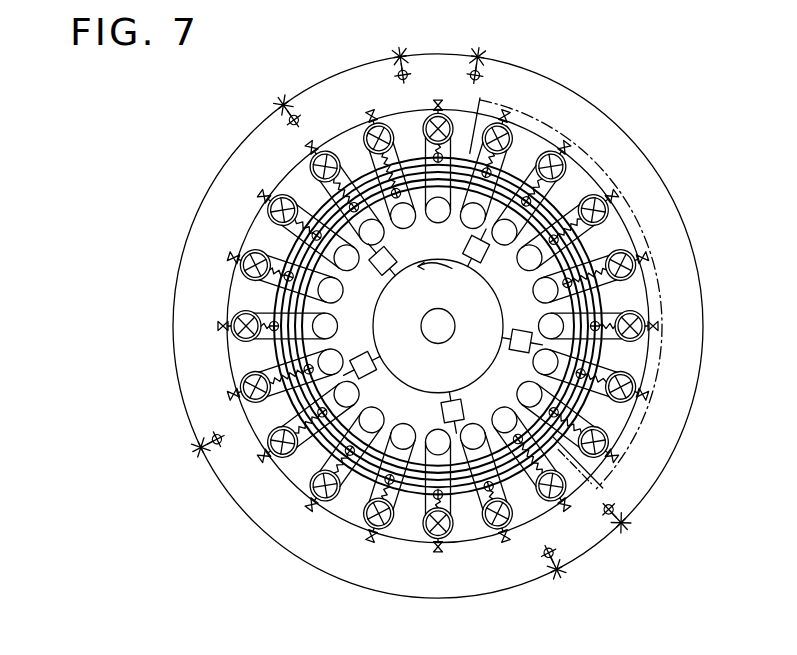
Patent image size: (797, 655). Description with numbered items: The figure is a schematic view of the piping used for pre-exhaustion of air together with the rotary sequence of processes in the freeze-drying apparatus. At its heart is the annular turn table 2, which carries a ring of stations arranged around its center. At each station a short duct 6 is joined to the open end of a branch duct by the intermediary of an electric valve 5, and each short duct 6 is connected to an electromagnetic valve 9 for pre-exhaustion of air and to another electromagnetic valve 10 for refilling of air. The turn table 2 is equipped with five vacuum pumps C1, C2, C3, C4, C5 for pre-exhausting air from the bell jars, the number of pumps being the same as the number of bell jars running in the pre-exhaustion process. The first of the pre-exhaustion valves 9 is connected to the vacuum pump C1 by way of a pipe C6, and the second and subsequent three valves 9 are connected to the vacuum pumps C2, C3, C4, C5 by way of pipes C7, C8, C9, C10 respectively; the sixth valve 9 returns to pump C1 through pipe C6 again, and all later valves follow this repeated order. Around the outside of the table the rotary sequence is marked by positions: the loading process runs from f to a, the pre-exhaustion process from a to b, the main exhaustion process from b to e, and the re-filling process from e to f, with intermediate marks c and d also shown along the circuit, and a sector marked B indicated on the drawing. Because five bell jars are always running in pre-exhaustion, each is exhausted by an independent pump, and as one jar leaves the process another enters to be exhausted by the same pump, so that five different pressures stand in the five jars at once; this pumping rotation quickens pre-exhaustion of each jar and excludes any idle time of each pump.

The annular turn table 2 is at (229, 300).
The electric valve 5 is at (270, 205).
The short duct 6 is at (243, 257).
The electromagnetic valve for pre-exhaustion of air 9 is at (493, 493).
The electromagnetic valve for refilling of air 10 is at (505, 542).
The cover sector B is at (639, 223).
The vacuum pump C1 is at (449, 391).
The vacuum pump C2 is at (383, 352).
The vacuum pump C3 is at (395, 276).
The vacuum pump C4 is at (467, 267).
The vacuum pump C5 is at (502, 338).
The pipe C6 is at (462, 480).
The pipe C7 is at (397, 490).
The pipe C8 is at (348, 468).
The pipe C9 is at (330, 427).
The pipe C10 is at (280, 365).
The process position a is at (197, 451).
The process position b is at (553, 574).
The connection point c is at (616, 528).
The connection point d is at (477, 55).
The process position e is at (400, 55).
The process position f is at (281, 99).